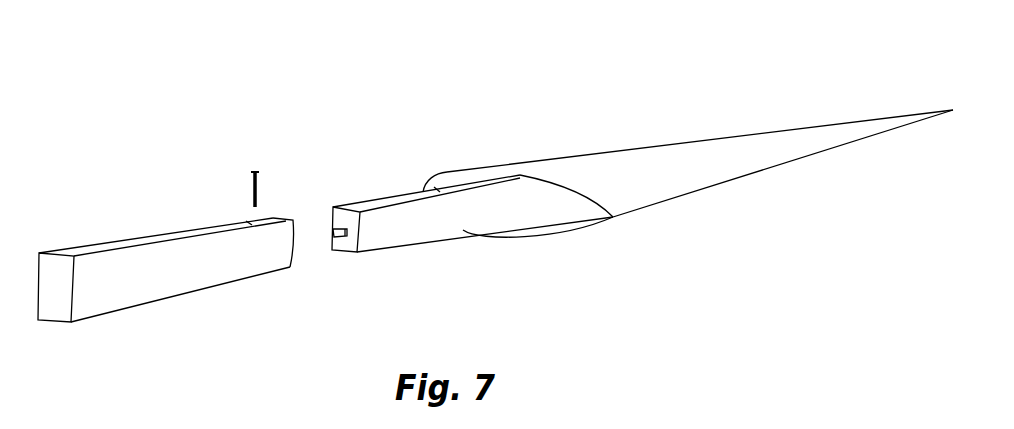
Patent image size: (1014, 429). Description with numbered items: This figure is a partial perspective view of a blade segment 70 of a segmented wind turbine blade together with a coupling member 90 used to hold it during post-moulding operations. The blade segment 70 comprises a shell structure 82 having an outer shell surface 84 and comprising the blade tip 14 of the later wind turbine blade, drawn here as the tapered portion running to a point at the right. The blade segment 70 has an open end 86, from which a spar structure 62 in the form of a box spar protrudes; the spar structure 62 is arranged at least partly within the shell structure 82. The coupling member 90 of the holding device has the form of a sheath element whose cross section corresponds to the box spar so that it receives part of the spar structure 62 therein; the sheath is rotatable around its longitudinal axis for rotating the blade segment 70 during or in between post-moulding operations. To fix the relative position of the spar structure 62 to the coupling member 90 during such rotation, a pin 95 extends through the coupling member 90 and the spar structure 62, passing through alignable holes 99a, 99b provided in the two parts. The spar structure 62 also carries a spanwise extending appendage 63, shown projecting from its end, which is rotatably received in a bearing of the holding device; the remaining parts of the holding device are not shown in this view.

The blade tip 14 is at (923, 112).
The blade segment 70 is at (561, 114).
The shell structure 82 is at (638, 187).
The outer shell surface 84 is at (713, 177).
The open end 86 is at (445, 172).
The coupling member 90 is at (173, 252).
The pin 95 is at (255, 172).
The fastener hole 99a is at (250, 224).
The fastener hole 99b is at (431, 189).
The spar structure 62 is at (365, 207).
The appendage 63 is at (332, 227).